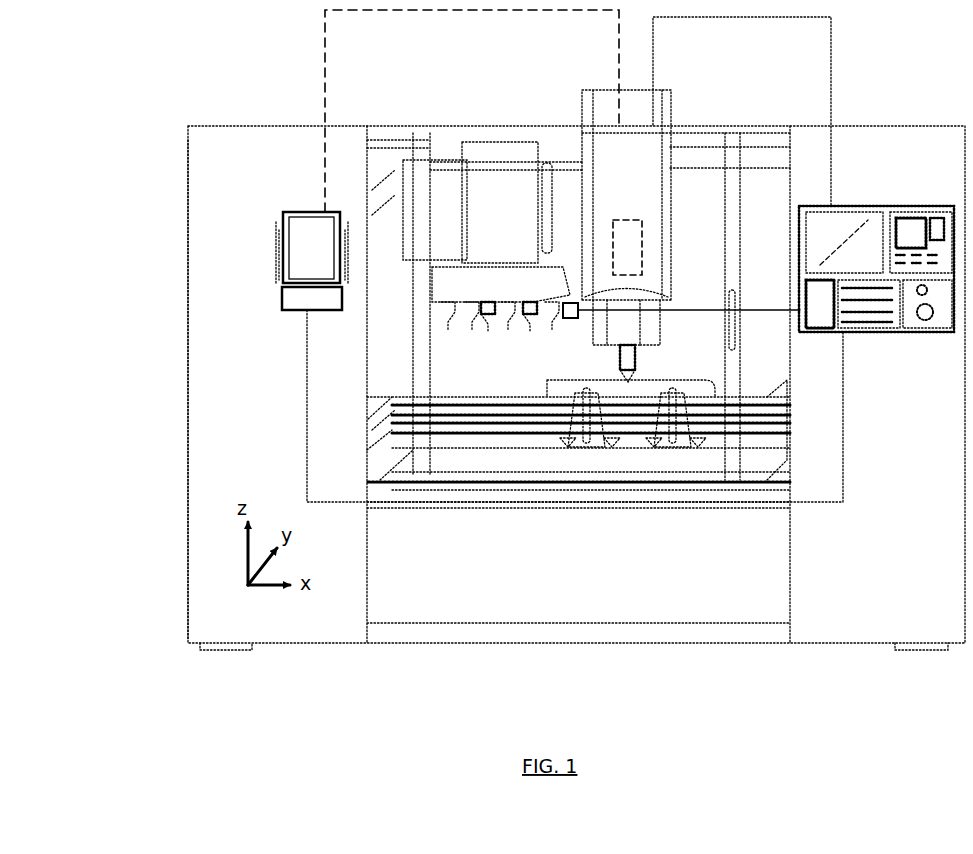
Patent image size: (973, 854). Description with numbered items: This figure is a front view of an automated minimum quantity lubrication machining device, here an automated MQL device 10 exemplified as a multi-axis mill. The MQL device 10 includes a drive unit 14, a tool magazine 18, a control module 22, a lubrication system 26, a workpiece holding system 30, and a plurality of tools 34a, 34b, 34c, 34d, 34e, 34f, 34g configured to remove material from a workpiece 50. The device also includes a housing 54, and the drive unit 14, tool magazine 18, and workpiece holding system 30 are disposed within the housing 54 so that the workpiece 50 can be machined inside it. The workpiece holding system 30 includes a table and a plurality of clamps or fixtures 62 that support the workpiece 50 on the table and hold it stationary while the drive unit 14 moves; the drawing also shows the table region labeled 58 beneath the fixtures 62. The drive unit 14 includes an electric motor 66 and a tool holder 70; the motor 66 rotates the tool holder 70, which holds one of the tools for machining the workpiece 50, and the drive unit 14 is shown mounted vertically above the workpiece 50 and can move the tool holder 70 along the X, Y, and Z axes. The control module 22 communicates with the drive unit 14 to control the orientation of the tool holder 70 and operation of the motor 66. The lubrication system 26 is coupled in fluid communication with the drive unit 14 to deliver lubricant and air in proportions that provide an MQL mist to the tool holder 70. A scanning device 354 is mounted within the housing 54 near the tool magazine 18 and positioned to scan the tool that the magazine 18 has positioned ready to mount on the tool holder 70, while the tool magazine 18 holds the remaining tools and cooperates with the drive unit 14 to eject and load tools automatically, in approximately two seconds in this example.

The automated MQL device 10 is at (215, 124).
The drive unit 14 is at (607, 150).
The tool magazine 18 is at (478, 312).
The control module 22 is at (892, 205).
The lubrication system 26 is at (308, 212).
The workpiece holding system 30 is at (470, 455).
The tool 34a is at (632, 382).
The tool 34b is at (448, 300).
The tool 34c is at (472, 300).
The tool 34d is at (488, 300).
The tool 34e is at (508, 300).
The tool 34f is at (530, 300).
The tool 34g is at (552, 300).
The workpiece 50 is at (545, 400).
The housing 54 is at (187, 212).
The table slide 58 is at (487, 475).
The fixtures 62 is at (598, 392).
The electric motor 66 is at (640, 220).
The tool holder 70 is at (632, 345).
The scanning device 354 is at (573, 318).